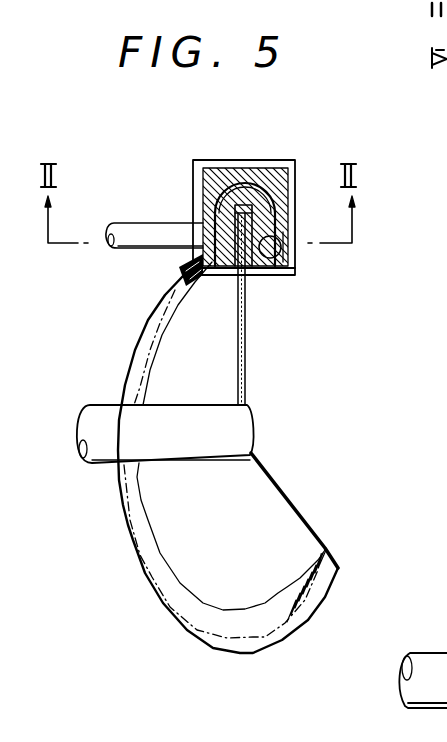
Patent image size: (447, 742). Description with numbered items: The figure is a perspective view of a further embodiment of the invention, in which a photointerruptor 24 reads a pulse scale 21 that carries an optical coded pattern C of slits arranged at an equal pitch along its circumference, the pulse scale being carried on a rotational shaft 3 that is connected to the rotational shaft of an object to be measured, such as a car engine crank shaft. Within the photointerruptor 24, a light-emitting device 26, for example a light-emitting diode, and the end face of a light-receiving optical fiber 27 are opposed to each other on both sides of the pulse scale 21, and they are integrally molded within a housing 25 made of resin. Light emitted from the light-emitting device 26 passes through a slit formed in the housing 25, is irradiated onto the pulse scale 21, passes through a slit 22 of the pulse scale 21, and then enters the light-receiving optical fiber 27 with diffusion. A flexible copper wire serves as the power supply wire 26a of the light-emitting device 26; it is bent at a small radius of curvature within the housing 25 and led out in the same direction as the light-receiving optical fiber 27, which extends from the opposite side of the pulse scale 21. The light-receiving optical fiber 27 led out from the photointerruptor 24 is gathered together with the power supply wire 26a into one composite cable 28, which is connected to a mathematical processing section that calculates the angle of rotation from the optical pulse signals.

The rotational shaft 3 is at (107, 466).
The pulse scale 21 is at (157, 600).
The slit 22 is at (324, 548).
The photointerruptor 24 is at (296, 189).
The housing 25 is at (212, 172).
The light-emitting device 26 is at (283, 264).
The power supply wire 26a is at (250, 184).
The light-receiving optical fiber 27 is at (212, 276).
The composite cable 28 is at (151, 222).
The optical coded pattern C is at (131, 538).